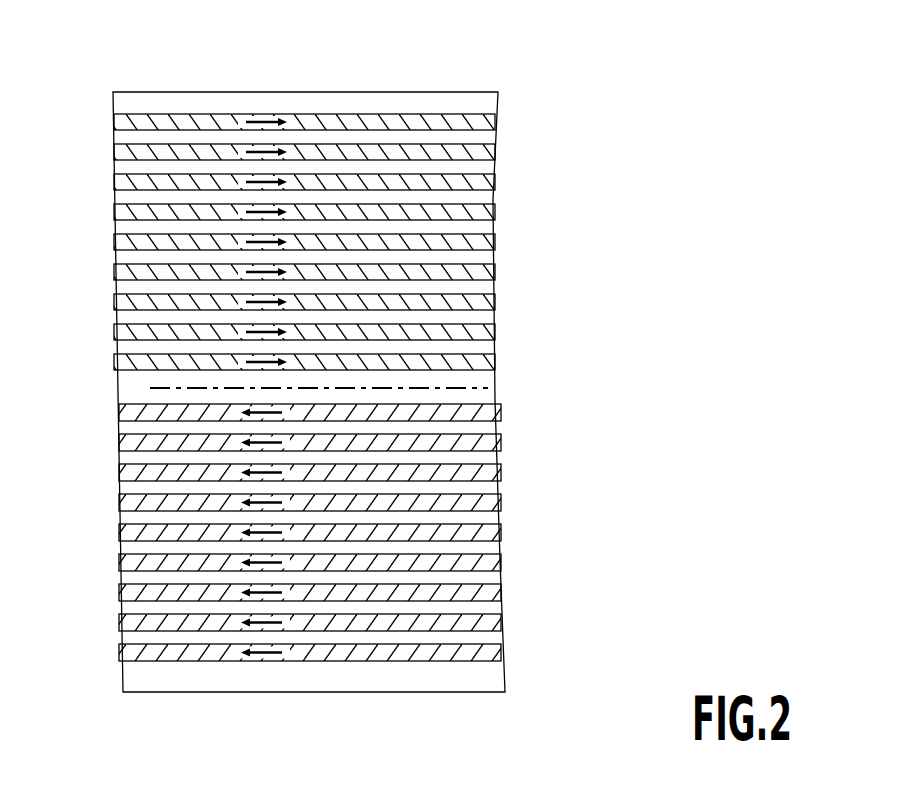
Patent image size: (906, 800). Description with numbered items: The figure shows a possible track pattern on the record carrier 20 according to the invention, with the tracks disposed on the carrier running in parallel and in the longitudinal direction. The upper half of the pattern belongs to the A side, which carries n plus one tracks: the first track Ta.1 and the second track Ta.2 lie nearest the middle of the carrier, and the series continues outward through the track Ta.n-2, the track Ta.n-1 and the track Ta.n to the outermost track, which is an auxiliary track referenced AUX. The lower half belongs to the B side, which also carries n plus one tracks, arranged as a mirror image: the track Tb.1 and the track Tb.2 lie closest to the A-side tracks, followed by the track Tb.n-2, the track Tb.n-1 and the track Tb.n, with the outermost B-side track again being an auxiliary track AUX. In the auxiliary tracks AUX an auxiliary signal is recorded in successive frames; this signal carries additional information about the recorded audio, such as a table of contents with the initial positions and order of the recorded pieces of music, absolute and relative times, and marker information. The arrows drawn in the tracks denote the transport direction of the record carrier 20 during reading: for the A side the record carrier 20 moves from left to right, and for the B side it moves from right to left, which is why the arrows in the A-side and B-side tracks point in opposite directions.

The record carrier 20 is at (403, 92).
The auxiliary track AUX is at (115, 122).
The track of the A side Ta.n is at (493, 155).
The track of the A side Ta.n-1 is at (493, 182).
The track of the A side Ta.n-2 is at (493, 210).
The track of the A side Ta.2 is at (493, 332).
The track of the A side Ta.1 is at (493, 363).
The track of the B side Tb.1 is at (497, 412).
The track of the B side Tb.2 is at (497, 442).
The track of the B side Tb.n-2 is at (500, 562).
The track of the B side Tb.n-1 is at (500, 590).
The track of the B side Tb.n is at (500, 621).